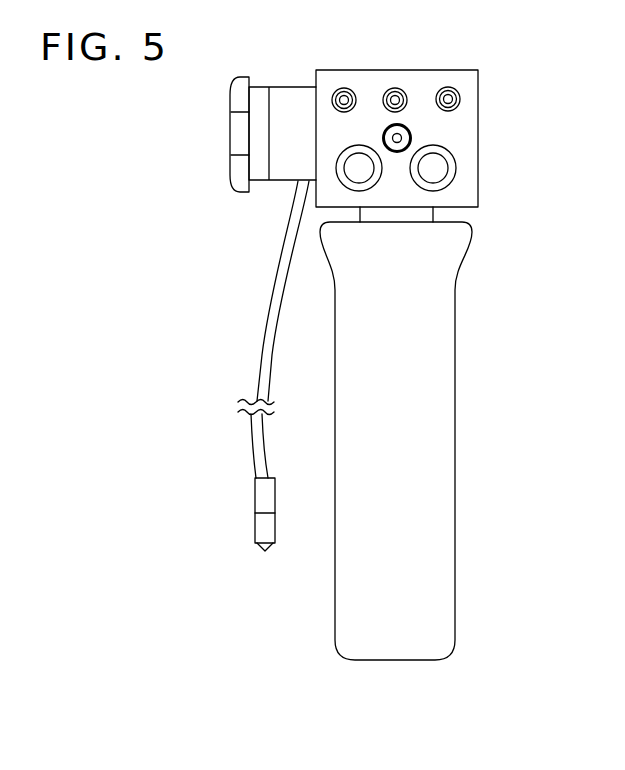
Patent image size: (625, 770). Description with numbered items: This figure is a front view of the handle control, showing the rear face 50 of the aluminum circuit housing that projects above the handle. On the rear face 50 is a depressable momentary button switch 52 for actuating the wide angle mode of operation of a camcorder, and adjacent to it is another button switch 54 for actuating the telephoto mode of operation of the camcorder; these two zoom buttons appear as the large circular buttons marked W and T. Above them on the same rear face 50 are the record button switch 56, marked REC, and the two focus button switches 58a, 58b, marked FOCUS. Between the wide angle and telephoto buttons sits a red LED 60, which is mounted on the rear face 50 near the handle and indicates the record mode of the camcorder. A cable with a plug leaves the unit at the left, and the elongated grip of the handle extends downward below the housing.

The rear face 50 is at (470, 145).
The depressable momentary button switch 52 is at (360, 170).
The button switch 54 is at (433, 168).
The record button switch 56 is at (344, 100).
The focus button switch 58a is at (395, 100).
The focus button switch 58b is at (448, 99).
The red LED 60 is at (397, 140).